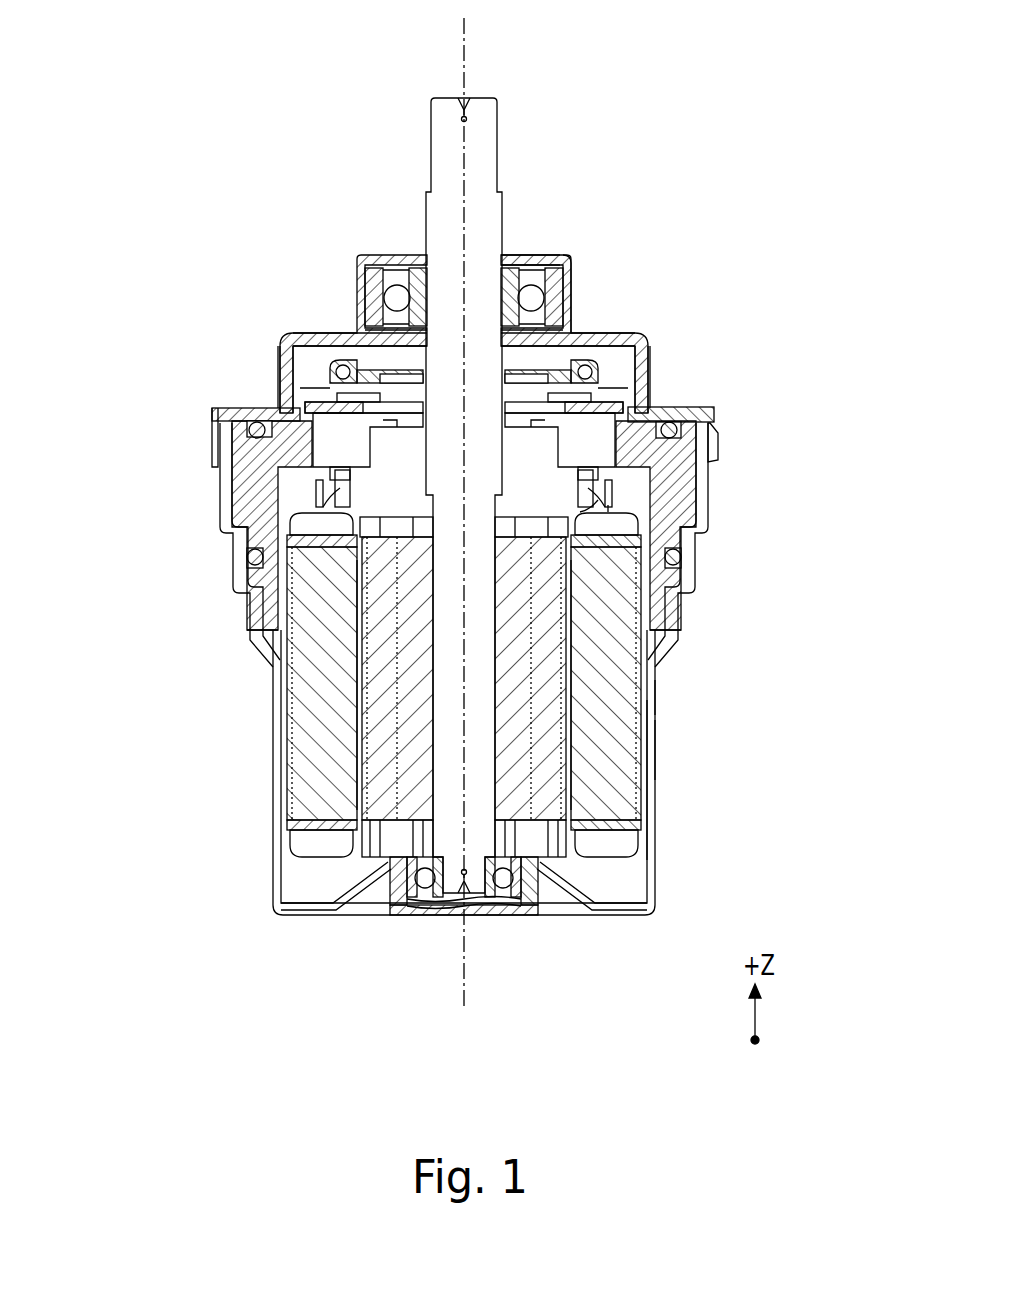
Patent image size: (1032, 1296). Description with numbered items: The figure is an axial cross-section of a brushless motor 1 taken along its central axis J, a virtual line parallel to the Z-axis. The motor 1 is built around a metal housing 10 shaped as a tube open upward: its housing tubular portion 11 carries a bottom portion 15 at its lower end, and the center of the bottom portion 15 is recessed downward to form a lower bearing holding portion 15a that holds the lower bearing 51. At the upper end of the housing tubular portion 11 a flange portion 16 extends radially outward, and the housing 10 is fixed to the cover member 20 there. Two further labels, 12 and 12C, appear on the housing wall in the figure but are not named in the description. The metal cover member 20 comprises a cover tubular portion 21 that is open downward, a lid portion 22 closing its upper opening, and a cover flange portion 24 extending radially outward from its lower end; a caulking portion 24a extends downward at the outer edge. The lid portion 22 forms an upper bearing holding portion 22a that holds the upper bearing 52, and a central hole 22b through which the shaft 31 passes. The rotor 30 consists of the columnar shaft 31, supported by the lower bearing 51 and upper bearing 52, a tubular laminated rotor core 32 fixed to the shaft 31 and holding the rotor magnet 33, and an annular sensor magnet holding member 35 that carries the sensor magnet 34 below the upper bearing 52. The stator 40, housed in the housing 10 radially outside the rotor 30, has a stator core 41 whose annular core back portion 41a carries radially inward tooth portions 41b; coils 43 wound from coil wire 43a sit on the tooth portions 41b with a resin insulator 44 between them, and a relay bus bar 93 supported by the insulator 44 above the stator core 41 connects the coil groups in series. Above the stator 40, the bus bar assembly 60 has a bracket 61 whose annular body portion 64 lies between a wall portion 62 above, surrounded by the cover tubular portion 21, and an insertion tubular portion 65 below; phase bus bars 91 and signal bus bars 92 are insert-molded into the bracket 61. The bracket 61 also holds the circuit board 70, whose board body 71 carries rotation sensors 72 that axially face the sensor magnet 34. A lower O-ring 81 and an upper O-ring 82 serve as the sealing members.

The motor 1 is at (700, 157).
The housing 10 is at (654, 876).
The housing tubular portion 11 is at (648, 795).
The housing inner peripheral surface 12 is at (649, 745).
The housing inner surface portion 12C is at (649, 700).
The bottom portion 15 is at (618, 912).
The lower bearing holding portion 15a is at (530, 898).
The flange portion 16 is at (712, 425).
The cover member 20 is at (649, 348).
The cover tubular portion 21 is at (641, 362).
The lid portion 22 is at (590, 340).
The upper bearing holding portion 22a is at (569, 265).
The central hole 22b is at (519, 264).
The cover flange portion 24 is at (700, 410).
The caulking portion 24a is at (716, 458).
The rotor 30 is at (393, 838).
The shaft 31 is at (499, 121).
The rotor core 32 is at (402, 810).
The rotor magnet 33 is at (395, 792).
The sensor magnet 34 is at (350, 380).
The sensor magnet holding member 35 is at (364, 372).
The stator 40 is at (287, 689).
The stator core 41 is at (290, 703).
The core back portion 41a is at (290, 728).
The tooth portions 41b is at (322, 762).
The coils 43 is at (297, 832).
The coil wire 43a is at (325, 497).
The insulator 44 is at (296, 818).
The lower bearing 51 is at (422, 880).
The upper bearing 52 is at (370, 380).
The bus bar assembly 60 is at (292, 385).
The bracket 61 is at (355, 465).
The wall portion 62 is at (290, 395).
The body portion 64 is at (248, 455).
The insertion tubular portion 65 is at (266, 606).
The circuit board 70 is at (318, 394).
The board body 71 is at (323, 410).
The rotation sensor 72 is at (340, 374).
The first sealing member 81 is at (681, 557).
The second sealing member 82 is at (670, 423).
The phase bus bar 91 is at (320, 458).
The signal bus bar 92 is at (396, 287).
The relay bus bar 93 is at (606, 500).
The central axis J is at (472, 57).